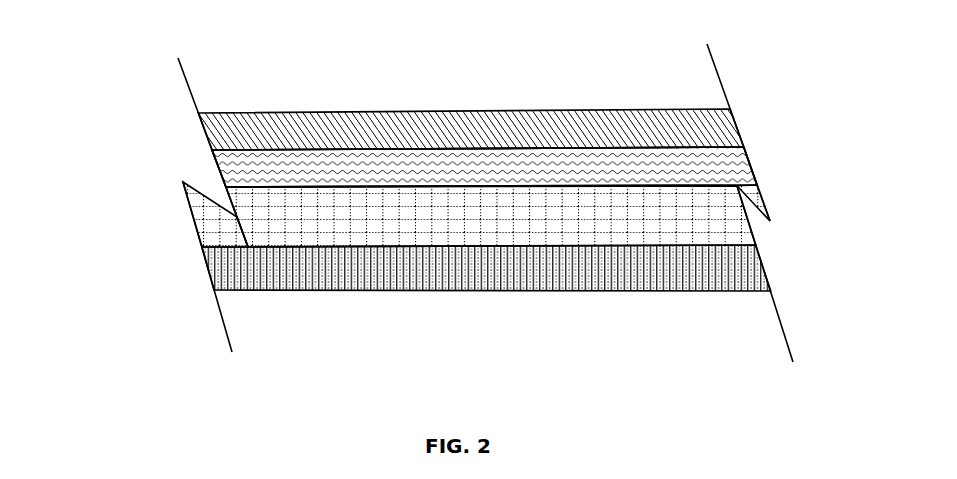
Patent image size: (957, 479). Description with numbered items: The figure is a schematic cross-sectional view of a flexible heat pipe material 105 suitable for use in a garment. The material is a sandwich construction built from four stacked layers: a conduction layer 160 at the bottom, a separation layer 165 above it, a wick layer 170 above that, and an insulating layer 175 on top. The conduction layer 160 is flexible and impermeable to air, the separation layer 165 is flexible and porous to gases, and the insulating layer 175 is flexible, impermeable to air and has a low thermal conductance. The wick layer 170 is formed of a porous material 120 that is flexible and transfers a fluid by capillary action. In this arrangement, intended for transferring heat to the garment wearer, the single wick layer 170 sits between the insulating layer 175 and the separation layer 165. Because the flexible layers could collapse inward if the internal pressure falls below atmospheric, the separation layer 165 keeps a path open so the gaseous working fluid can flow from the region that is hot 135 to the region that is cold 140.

The flexible heat pipe material 105 is at (463, 216).
The porous material 120 is at (428, 165).
The region that is hot 135 is at (147, 131).
The region that is cold 140 is at (535, 332).
The conduction layer 160 is at (307, 283).
The separation layer 165 is at (538, 213).
The wick layer 170 is at (428, 165).
The insulating layer 175 is at (293, 112).